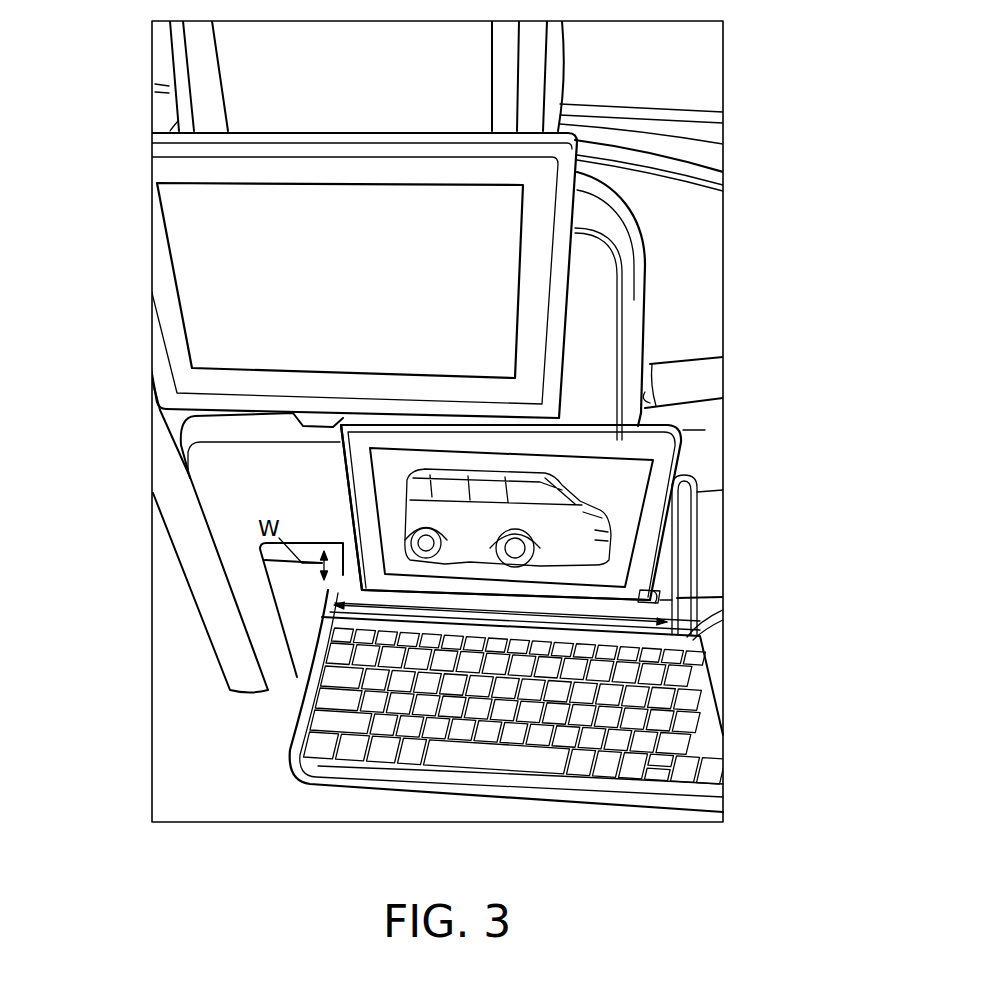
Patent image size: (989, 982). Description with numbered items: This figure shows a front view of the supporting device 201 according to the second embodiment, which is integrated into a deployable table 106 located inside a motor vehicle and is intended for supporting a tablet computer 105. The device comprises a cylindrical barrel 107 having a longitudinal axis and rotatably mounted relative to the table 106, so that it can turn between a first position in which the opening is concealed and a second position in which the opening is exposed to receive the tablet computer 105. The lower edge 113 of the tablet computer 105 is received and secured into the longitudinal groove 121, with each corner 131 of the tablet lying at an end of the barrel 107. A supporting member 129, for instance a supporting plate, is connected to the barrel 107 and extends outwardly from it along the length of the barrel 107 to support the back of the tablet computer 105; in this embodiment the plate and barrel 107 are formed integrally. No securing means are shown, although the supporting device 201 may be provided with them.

The tablet computer 105 is at (658, 475).
The deployable table 106 is at (316, 677).
The cylindrical barrel 107 is at (657, 603).
The lower edge 113 is at (653, 592).
The longitudinal groove 121 is at (660, 598).
The supporting member 129 is at (598, 595).
The corner 131 is at (373, 587).
The supporting device 201 is at (345, 538).